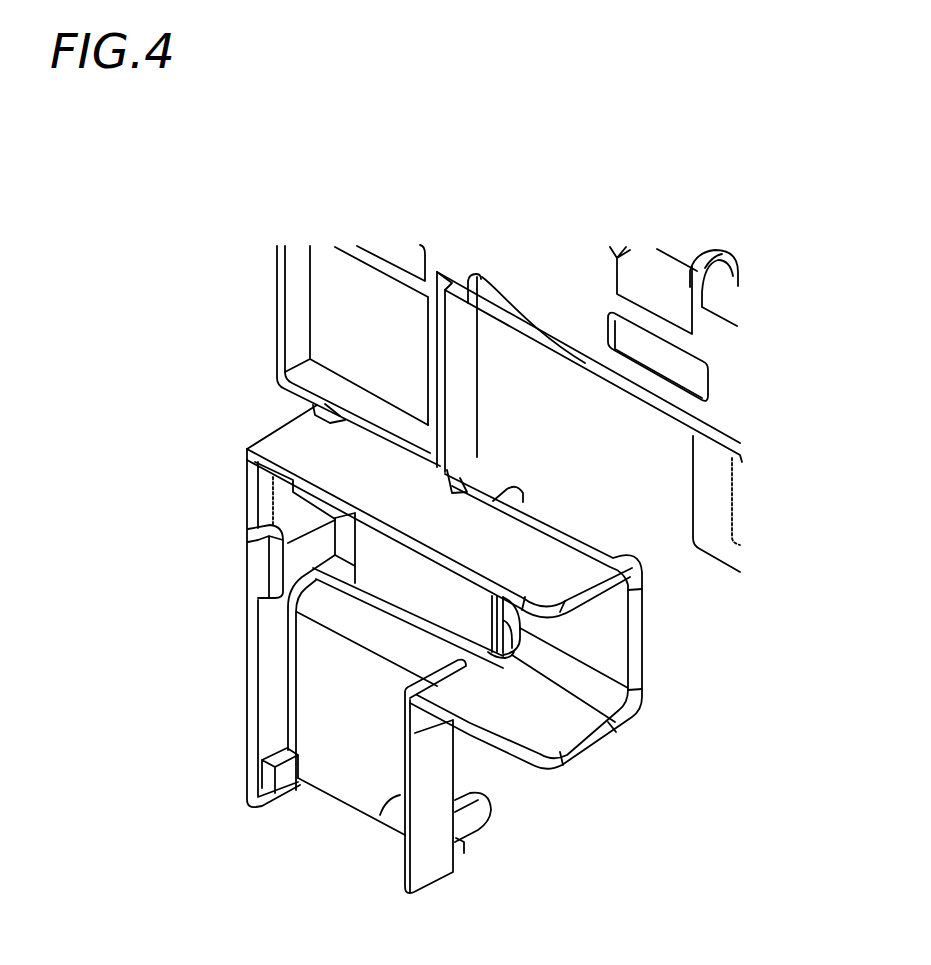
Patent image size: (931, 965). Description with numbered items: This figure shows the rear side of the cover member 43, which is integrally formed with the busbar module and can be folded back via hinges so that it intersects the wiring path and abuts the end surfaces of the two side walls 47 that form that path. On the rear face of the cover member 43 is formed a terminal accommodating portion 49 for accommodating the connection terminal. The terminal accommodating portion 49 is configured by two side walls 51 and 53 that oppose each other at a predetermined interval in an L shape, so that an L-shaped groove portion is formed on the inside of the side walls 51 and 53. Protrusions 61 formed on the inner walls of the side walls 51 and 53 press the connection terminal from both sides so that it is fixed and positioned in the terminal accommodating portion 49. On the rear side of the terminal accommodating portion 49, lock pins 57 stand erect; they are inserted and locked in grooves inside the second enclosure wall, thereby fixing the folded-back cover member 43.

The cover member 43 is at (246, 563).
The side walls 47 is at (348, 432).
The terminal accommodating portion 49 is at (348, 767).
The side wall 51 is at (248, 644).
The side wall 53 is at (403, 800).
The lock pins 57 is at (490, 826).
The protrusions 61 is at (290, 779).